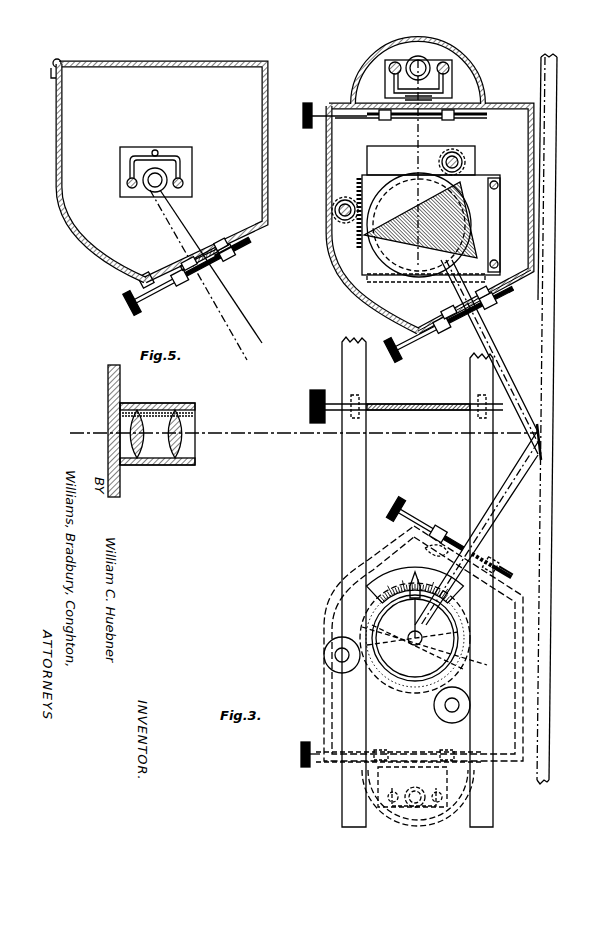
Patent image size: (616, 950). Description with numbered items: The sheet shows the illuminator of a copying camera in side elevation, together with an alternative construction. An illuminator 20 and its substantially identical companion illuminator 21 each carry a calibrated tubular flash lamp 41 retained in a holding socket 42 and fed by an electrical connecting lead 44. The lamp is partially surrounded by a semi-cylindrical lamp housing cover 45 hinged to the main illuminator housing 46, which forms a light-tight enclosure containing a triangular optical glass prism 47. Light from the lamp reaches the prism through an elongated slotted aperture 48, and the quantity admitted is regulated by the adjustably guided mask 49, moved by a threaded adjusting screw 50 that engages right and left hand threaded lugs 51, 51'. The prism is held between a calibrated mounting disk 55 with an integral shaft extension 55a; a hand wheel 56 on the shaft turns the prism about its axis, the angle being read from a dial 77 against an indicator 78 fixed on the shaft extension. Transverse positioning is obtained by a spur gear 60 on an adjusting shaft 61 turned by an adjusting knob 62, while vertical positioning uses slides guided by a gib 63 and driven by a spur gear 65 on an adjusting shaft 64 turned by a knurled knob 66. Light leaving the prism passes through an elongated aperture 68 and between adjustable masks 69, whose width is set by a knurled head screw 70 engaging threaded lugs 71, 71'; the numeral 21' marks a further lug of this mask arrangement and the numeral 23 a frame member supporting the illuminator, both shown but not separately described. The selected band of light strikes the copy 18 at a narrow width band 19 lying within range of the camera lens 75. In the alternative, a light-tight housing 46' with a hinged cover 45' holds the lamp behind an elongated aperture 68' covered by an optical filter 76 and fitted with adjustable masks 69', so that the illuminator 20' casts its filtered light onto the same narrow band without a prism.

In FIG. 3, the copy 18 is at (551, 486).
In FIG. 3, the narrow width band 19 is at (541, 423).
In FIG. 3, the illuminator 20 is at (499, 259).
In FIG. 5, the illuminator (alternative) 20' is at (251, 258).
In FIG. 3, the illuminator 21 is at (538, 556).
In FIG. 3, the clamp block 21' is at (492, 557).
In FIG. 3, the support standards 23 is at (343, 462).
In FIG. 5, the calibrated tubular flash lamp 41 is at (150, 192).
In FIG. 3, the calibrated tubular flash lamp 41 is at (428, 65).
In FIG. 3, the holding socket 42 is at (455, 85).
In FIG. 3, the electrical connecting lead 44 is at (395, 92).
In FIG. 3, the semi-cylindrical lamp housing cover 45 is at (397, 432).
In FIG. 5, the hinged cover 45' is at (98, 172).
In FIG. 3, the main illuminator housing 46 is at (410, 433).
In FIG. 5, the light-tight housing (alternative) 46' is at (174, 173).
In FIG. 3, the triangular optical glass prism 47 is at (462, 250).
In FIG. 3, the elongated slotted aperture 48 is at (440, 98).
In FIG. 3, the adjustably guided mask 49 is at (340, 104).
In FIG. 3, the threaded adjusting screw 50 is at (306, 128).
In FIG. 3, the threaded lug 51 is at (376, 435).
In FIG. 3, the threaded lug 51' is at (454, 435).
In FIG. 3, the flat cylindrical mounting disk 55 is at (405, 190).
In FIG. 3, the shaft extension 55a is at (409, 636).
In FIG. 3, the hand wheel 56 is at (395, 670).
In FIG. 3, the spur gear 60 is at (466, 150).
In FIG. 3, the adjusting shaft 61 is at (465, 162).
In FIG. 3, the adjusting knob 62 is at (465, 717).
In FIG. 3, the gib 63 is at (492, 206).
In FIG. 3, the adjusting shaft 64 is at (345, 221).
In FIG. 3, the spur gear 65 is at (352, 200).
In FIG. 3, the knurled knob 66 is at (327, 648).
In FIG. 3, the elongated aperture 68 is at (449, 422).
In FIG. 5, the elongated aperture (alternative) 68' is at (187, 254).
In FIG. 3, the adjustable mask 69 is at (458, 441).
In FIG. 5, the adjustable mask (alternative) 69' is at (190, 272).
In FIG. 3, the knurled head screw 70 is at (400, 362).
In FIG. 3, the threaded lug 71 is at (472, 418).
In FIG. 3, the threaded lug 71' is at (498, 302).
In FIG. 3, the camera lens 75 is at (160, 466).
In FIG. 5, the optical filter 76 is at (208, 256).
In FIG. 3, the dial 77 is at (404, 578).
In FIG. 3, the indicator 78 is at (414, 598).